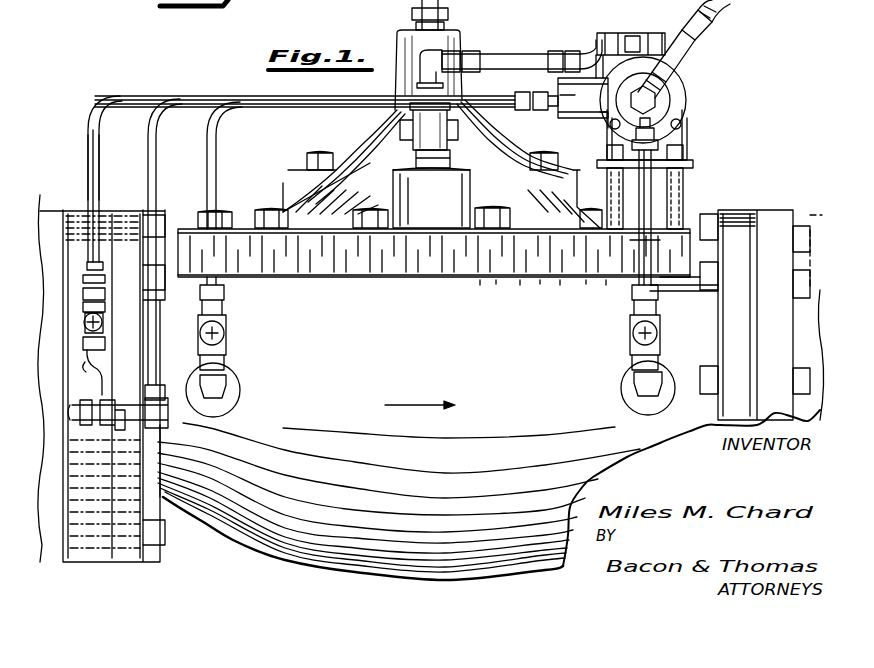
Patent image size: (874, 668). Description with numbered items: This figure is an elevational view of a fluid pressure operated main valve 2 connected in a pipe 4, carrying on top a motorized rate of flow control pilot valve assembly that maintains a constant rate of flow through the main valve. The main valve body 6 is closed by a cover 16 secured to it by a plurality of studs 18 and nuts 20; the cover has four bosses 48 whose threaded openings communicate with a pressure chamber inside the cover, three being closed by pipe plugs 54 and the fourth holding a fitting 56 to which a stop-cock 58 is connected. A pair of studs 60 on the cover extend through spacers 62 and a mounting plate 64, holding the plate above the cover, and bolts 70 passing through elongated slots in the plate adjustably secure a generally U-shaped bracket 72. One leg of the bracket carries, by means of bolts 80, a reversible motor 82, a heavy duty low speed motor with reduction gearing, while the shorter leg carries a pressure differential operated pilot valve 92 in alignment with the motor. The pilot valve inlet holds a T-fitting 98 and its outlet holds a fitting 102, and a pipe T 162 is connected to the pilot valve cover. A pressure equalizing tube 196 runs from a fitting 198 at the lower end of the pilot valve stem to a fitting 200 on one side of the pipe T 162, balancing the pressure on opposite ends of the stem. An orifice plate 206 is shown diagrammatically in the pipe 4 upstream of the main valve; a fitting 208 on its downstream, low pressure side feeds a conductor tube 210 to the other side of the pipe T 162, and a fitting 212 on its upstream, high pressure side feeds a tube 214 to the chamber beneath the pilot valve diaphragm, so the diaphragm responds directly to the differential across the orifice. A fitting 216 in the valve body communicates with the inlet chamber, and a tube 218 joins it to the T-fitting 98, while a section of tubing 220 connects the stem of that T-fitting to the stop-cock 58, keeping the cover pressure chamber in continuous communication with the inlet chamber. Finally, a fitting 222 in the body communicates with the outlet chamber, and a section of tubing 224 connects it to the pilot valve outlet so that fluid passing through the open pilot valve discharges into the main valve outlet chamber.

The main valve 2 is at (238, 558).
The pipe 4 is at (52, 202).
The body 6 is at (298, 560).
The cover 16 is at (510, 258).
The studs 18 is at (270, 212).
The nuts 20 is at (205, 218).
The bosses 48 is at (415, 196).
The pipe plugs 54 is at (316, 156).
The fitting 56 is at (448, 154).
The stop-cock 58 is at (425, 137).
The studs 60 is at (672, 284).
The spacers 62 is at (608, 202).
The mounting plate 64 is at (598, 164).
The bolts 70 is at (684, 150).
The bracket 72 is at (598, 149).
The bolts 80 is at (672, 100).
The reversible motor 82 is at (685, 90).
The pilot valve 92 is at (629, 44).
The fitting 98 is at (580, 106).
The fitting 102 is at (658, 140).
The pipe T 162 is at (655, 40).
The pressure equalizing tube 196 is at (690, 56).
The fitting 198 is at (660, 98).
The fitting 200 is at (690, 34).
The orifice plate 206 is at (77, 213).
The fitting 208 is at (125, 384).
The conductor tube 210 is at (138, 98).
The fitting 212 is at (84, 430).
The tube 214 is at (156, 160).
The fitting 216 is at (235, 405).
The tube 218 is at (218, 158).
The tubing 220 is at (496, 58).
The fitting 222 is at (620, 390).
The tubing 224 is at (638, 266).